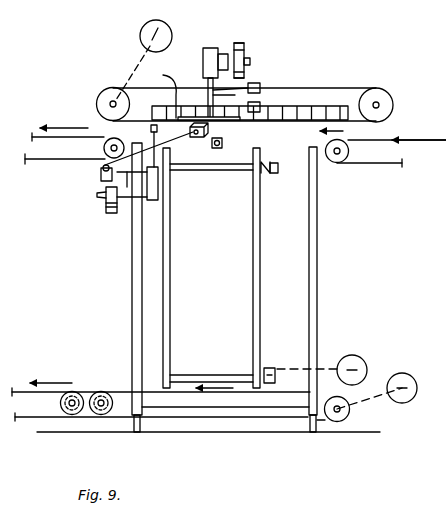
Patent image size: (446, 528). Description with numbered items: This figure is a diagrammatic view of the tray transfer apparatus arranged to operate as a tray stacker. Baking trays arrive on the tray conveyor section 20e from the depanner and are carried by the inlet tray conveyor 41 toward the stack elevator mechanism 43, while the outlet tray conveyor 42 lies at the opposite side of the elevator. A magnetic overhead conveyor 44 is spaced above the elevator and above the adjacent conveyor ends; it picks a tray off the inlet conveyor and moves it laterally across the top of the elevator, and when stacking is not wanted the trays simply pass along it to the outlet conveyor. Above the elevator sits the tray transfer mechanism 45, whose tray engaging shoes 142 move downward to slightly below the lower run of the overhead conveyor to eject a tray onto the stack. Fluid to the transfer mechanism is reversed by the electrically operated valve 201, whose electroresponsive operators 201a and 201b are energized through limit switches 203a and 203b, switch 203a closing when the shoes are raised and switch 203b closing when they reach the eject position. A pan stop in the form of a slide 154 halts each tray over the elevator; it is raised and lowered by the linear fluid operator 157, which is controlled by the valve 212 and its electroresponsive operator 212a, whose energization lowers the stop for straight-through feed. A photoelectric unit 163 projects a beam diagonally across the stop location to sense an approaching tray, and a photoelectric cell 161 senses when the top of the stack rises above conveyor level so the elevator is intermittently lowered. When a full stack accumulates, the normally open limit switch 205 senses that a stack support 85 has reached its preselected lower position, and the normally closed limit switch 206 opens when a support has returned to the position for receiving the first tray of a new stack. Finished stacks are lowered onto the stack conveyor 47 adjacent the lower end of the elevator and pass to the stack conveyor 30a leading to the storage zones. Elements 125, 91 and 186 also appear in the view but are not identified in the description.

The drive sprocket 125 is at (166, 18).
The tray transfer mechanism 45 is at (200, 80).
The photoelectric unit 163 is at (172, 117).
The outlet tray conveyor 42 is at (90, 126).
The slide 154 is at (151, 128).
The valve 212 is at (106, 190).
The electroresponsive operator 212a is at (107, 207).
The operator 157 is at (152, 200).
The stack support 85 is at (228, 171).
The electroresponsive operator 201a is at (245, 43).
The valve 201 is at (246, 55).
The electroresponsive operator 201b is at (246, 72).
The limit switch 203a is at (261, 85).
The limit switch 203b is at (260, 104).
The magnetic overhead conveyor 44 is at (352, 84).
The inlet tray conveyor 41 is at (372, 136).
The photoelectric cell 161 is at (222, 144).
The tray engaging shoes 142 is at (260, 117).
The limit switch 206 is at (278, 173).
The stack elevator mechanism 43 is at (264, 242).
The stack conveyor 30a is at (20, 392).
The stack conveyor 47 is at (117, 392).
The limit switch 205 is at (268, 368).
The pulley 91 is at (354, 360).
The drive pulley 186 is at (402, 373).
The tray conveyor section 20e is at (310, 3).